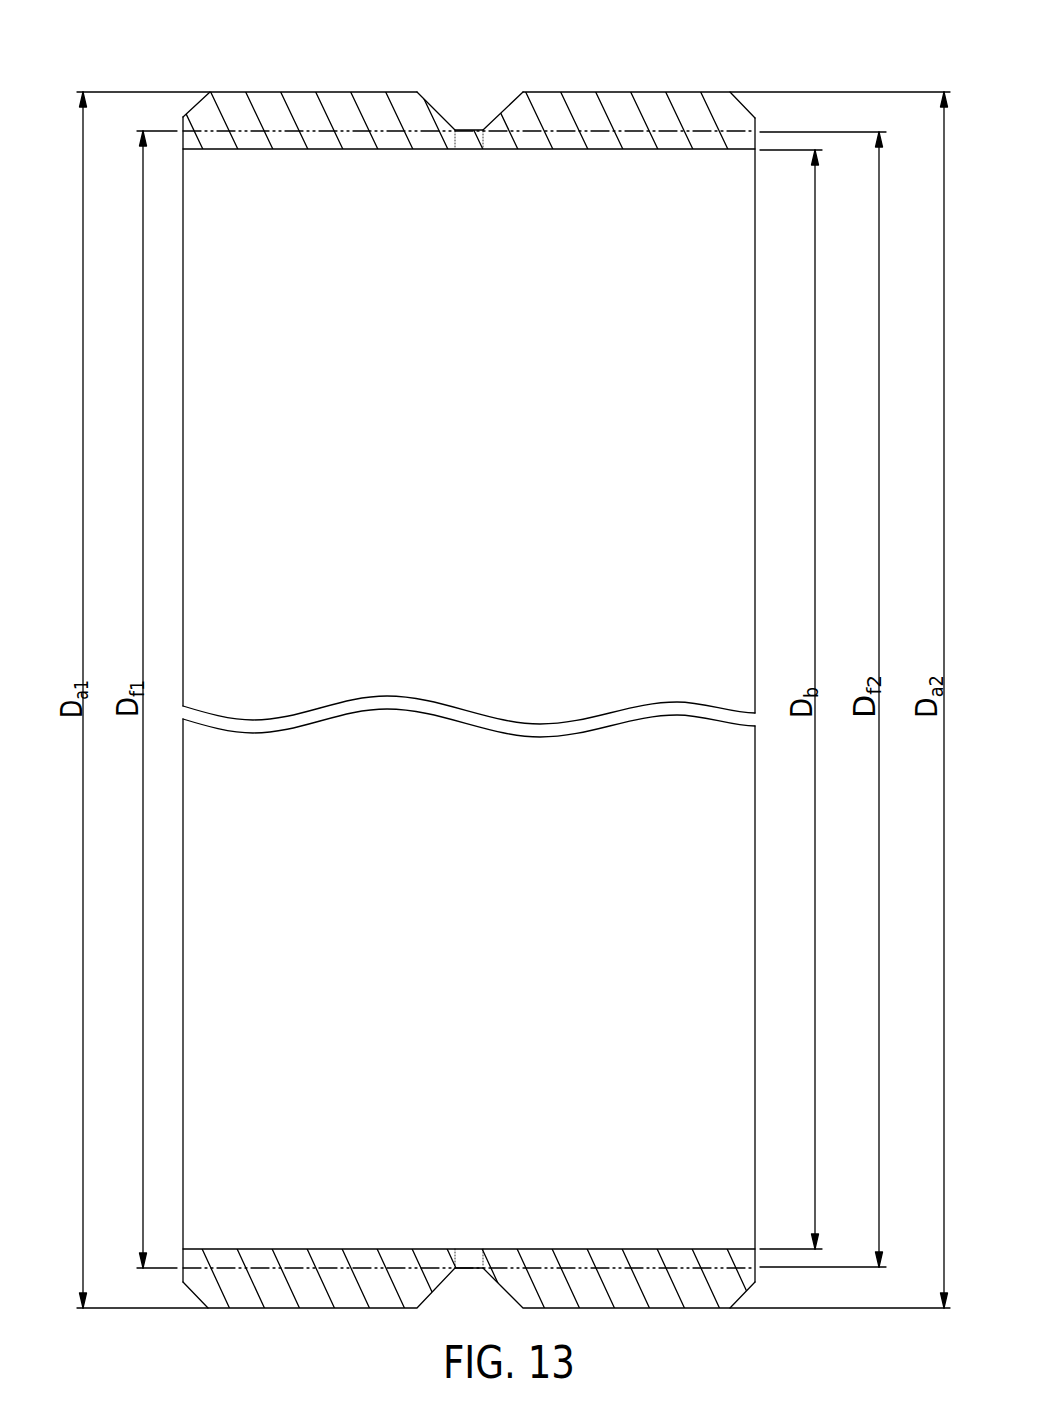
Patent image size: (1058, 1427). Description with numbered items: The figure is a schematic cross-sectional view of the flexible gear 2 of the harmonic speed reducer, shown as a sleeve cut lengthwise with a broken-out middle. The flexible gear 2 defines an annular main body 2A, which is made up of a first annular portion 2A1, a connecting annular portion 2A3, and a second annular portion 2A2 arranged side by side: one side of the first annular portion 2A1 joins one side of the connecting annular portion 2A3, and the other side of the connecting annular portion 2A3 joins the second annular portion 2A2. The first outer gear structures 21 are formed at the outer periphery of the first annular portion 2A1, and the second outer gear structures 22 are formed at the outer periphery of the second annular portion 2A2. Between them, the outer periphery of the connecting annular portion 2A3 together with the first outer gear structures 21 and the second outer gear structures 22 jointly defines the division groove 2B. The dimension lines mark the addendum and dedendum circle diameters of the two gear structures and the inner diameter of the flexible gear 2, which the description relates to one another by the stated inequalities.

The flexible gear 2 is at (200, 32).
The first outer gear structure 21 is at (308, 110).
The second outer gear structure 22 is at (654, 112).
The annular main body 2A is at (592, 231).
The first annular portion 2A1 is at (356, 142).
The second annular portion 2A2 is at (564, 142).
The connecting annular portion 2A3 is at (468, 142).
The division groove 2B is at (469, 112).